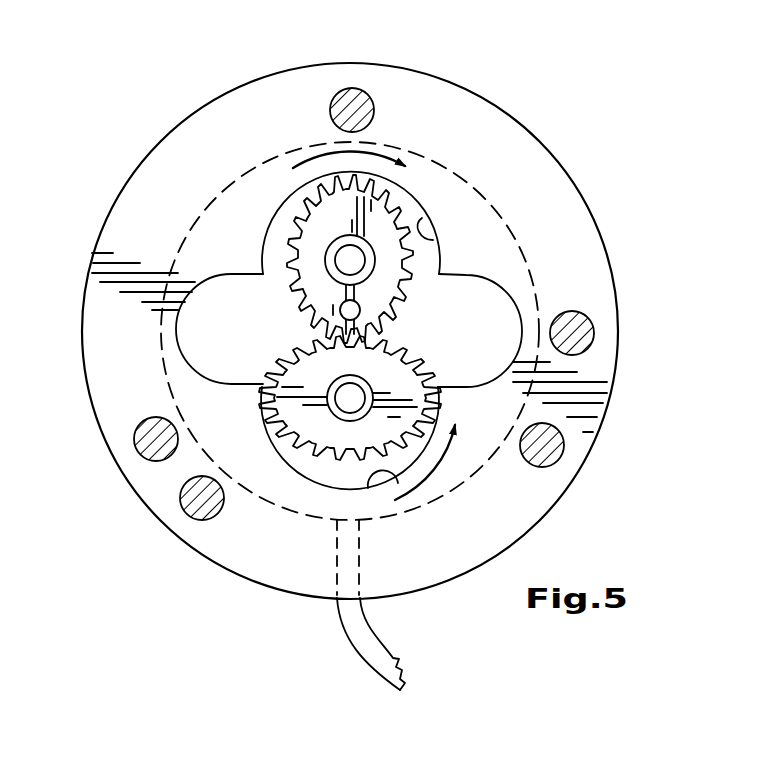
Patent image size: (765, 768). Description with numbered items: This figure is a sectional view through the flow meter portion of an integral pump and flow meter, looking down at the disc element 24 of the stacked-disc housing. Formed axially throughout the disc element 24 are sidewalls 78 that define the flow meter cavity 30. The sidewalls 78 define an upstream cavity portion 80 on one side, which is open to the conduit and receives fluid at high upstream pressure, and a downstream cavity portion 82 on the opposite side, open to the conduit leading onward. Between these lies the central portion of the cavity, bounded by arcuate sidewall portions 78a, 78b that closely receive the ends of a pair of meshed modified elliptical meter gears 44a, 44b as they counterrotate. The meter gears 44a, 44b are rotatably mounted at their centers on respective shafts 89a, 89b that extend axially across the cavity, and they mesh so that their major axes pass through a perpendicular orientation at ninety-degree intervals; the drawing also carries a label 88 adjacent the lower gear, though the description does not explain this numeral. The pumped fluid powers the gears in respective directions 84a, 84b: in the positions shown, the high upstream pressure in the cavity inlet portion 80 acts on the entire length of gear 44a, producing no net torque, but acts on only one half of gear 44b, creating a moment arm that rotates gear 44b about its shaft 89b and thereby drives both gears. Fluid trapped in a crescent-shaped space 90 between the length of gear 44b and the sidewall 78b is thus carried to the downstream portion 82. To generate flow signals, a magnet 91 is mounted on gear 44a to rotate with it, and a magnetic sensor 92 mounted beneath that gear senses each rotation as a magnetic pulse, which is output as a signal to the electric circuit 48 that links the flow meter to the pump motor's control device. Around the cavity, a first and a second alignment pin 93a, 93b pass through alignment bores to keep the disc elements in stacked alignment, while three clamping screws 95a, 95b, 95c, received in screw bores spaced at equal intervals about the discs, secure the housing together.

The disc element 24 is at (616, 272).
The flow meter cavity 30 is at (231, 352).
The modified elliptical meter gear 44a is at (263, 254).
The modified elliptical meter gear 44b is at (287, 462).
The electric circuit 48 is at (372, 628).
The sidewalls 78 is at (515, 335).
The arcuate sidewall portion 78a is at (433, 240).
The arcuate sidewall portion 78b is at (372, 490).
The upstream cavity portion 80 is at (208, 320).
The downstream cavity portion 82 is at (482, 298).
The direction of rotation 84a is at (372, 156).
The direction of rotation 84b is at (440, 467).
The lower gear 88 is at (400, 353).
The shaft 89a is at (330, 250).
The shaft 89b is at (318, 385).
The crescent-shaped space 90 is at (330, 488).
The magnet 91 is at (360, 310).
The magnetic sensor 92 is at (521, 248).
The first alignment pin 93a is at (182, 513).
The second alignment pin 93b is at (595, 333).
The clamping screw 95a is at (134, 437).
The clamping screw 95b is at (354, 88).
The clamping screw 95c is at (564, 447).